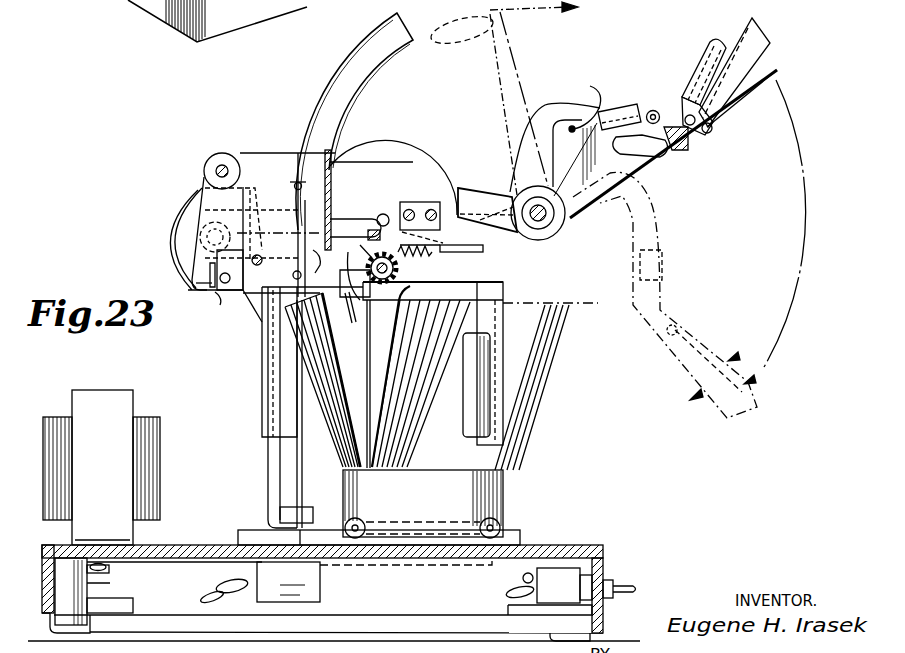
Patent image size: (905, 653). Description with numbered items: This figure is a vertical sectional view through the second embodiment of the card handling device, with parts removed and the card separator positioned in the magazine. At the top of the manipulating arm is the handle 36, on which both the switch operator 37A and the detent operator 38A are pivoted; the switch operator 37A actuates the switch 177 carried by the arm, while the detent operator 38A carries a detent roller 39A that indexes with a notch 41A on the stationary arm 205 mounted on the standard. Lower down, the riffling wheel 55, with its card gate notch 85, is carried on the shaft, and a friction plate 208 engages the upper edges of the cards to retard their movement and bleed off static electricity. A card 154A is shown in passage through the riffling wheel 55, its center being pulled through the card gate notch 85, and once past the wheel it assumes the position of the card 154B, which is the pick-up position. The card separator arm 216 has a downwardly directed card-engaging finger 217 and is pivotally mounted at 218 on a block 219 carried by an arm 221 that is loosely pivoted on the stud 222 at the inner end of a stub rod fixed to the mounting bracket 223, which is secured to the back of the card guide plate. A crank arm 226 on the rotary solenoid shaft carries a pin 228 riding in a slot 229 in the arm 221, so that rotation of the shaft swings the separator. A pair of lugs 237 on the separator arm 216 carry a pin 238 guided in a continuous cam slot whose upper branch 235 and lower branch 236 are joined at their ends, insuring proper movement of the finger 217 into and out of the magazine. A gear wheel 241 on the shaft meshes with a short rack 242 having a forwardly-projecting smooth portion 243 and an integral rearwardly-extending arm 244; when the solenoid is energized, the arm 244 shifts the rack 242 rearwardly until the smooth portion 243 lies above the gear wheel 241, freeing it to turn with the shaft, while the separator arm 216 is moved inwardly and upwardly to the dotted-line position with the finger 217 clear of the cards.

The handle 36 is at (780, 72).
The switch operator 37A is at (763, 33).
The detent operator 38A is at (708, 58).
The detent roller 39A is at (655, 110).
The notch 41A is at (641, 118).
The riffling wheel 55 is at (410, 288).
The card gate notch 85 is at (384, 313).
The card 154A is at (368, 415).
The card 154B is at (357, 387).
The switch 177 is at (678, 270).
The stationary arm 205 is at (643, 158).
The friction plate 208 is at (505, 300).
The card separator arm 216 is at (238, 320).
The card-engaging finger 217 is at (320, 327).
The pivot 218 is at (252, 297).
The block 219 is at (210, 291).
The arm 221 is at (200, 194).
The stud 222 is at (216, 170).
The mounting bracket 223 is at (259, 160).
The crank arm 226 is at (192, 265).
The pin 228 is at (198, 283).
The slot 229 is at (215, 262).
The upper branch 235 is at (300, 187).
The lower branch 236 is at (356, 303).
The lugs 237 is at (286, 330).
The pin 238 is at (300, 276).
The gear wheel 241 is at (393, 268).
The short rack 242 is at (398, 250).
The smooth portion 243 is at (452, 253).
The arm 244 is at (354, 210).